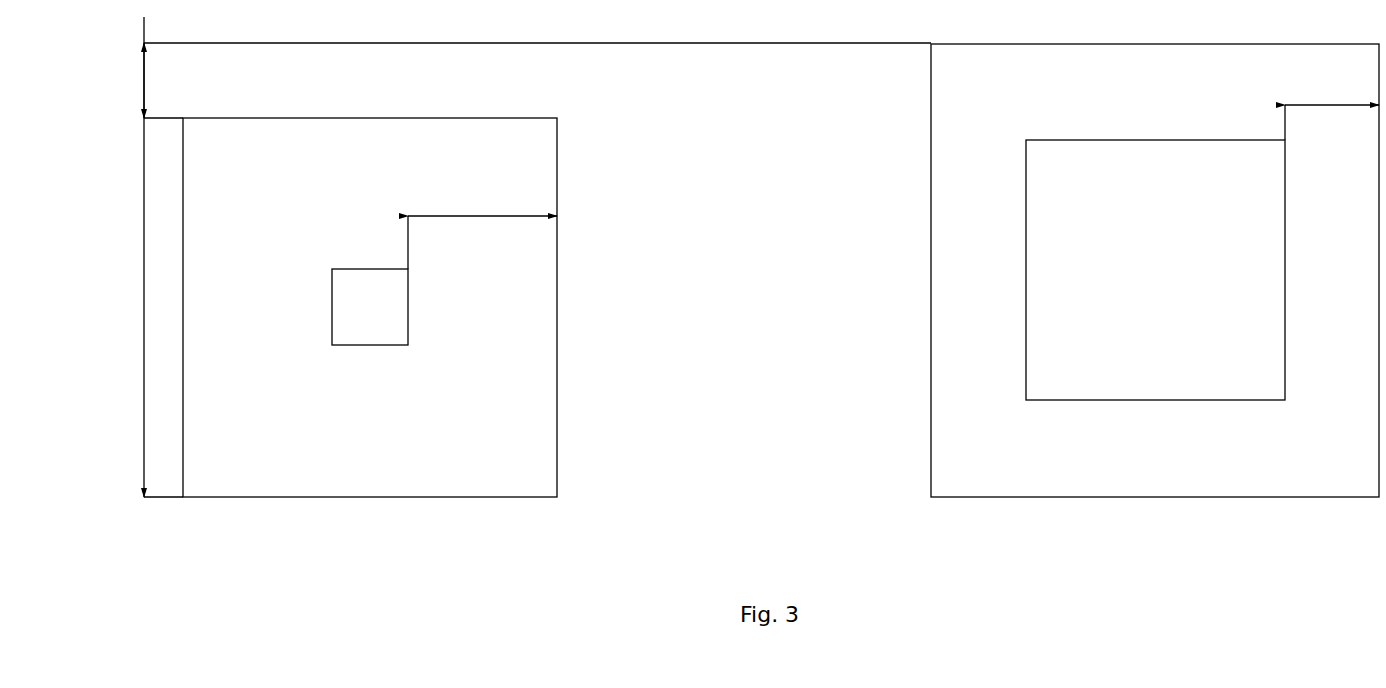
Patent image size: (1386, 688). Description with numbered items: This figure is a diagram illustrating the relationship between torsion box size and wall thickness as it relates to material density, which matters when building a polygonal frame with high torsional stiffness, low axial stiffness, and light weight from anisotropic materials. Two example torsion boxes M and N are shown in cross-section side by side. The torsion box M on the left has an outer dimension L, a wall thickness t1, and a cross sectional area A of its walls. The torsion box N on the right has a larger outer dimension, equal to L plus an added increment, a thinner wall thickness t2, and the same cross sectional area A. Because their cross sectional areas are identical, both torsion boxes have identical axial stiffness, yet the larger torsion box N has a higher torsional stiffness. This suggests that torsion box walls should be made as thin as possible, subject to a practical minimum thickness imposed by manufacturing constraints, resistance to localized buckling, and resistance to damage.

The cross sectional area A is at (480, 418).
The torsion box M is at (370, 307).
The torsion box N is at (1155, 270).
The wall thickness t1 is at (482, 226).
The wall thickness t2 is at (1332, 108).
The dimension L is at (147, 307).